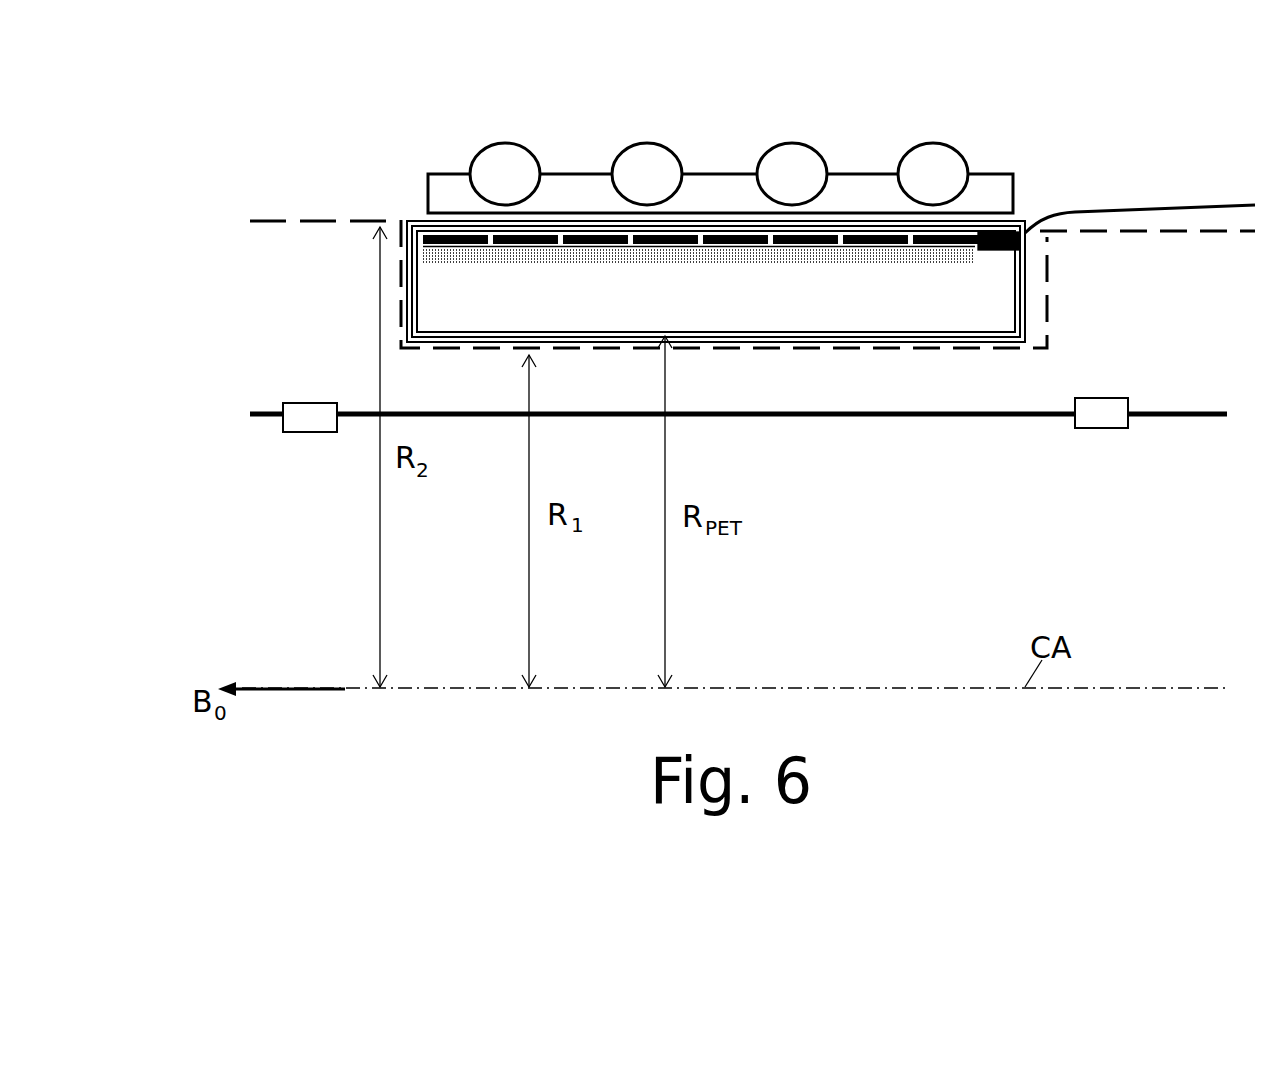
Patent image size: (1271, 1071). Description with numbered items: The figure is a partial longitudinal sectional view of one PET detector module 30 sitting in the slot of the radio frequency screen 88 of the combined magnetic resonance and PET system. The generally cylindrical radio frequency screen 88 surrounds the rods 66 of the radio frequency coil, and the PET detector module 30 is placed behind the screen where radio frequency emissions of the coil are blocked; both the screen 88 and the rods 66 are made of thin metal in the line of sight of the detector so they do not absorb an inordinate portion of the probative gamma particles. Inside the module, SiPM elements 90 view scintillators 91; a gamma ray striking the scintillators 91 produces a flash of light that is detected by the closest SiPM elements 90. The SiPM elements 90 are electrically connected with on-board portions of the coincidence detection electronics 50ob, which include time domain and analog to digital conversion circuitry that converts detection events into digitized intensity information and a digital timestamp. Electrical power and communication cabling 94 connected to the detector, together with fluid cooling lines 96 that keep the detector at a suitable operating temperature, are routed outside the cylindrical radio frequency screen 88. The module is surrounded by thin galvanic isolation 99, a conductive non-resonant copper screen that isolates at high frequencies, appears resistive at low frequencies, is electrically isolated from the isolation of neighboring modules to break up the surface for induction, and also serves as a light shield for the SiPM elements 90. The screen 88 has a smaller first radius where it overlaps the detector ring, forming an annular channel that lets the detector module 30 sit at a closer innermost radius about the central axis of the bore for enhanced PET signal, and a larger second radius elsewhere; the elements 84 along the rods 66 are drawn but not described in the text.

The PET detector module 30 is at (738, 128).
The fluid cooling lines 96 is at (853, 183).
The electrical power and communication cabling 94 is at (1152, 205).
The galvanic isolation 99 is at (422, 225).
The radio frequency screen 88 is at (317, 220).
The SiPM elements 90 is at (523, 265).
The scintillators 91 is at (660, 300).
The on-board portions of the coincidence detection electronics 50ob is at (665, 248).
The rods 66 is at (935, 418).
The connector box 84 is at (310, 433).